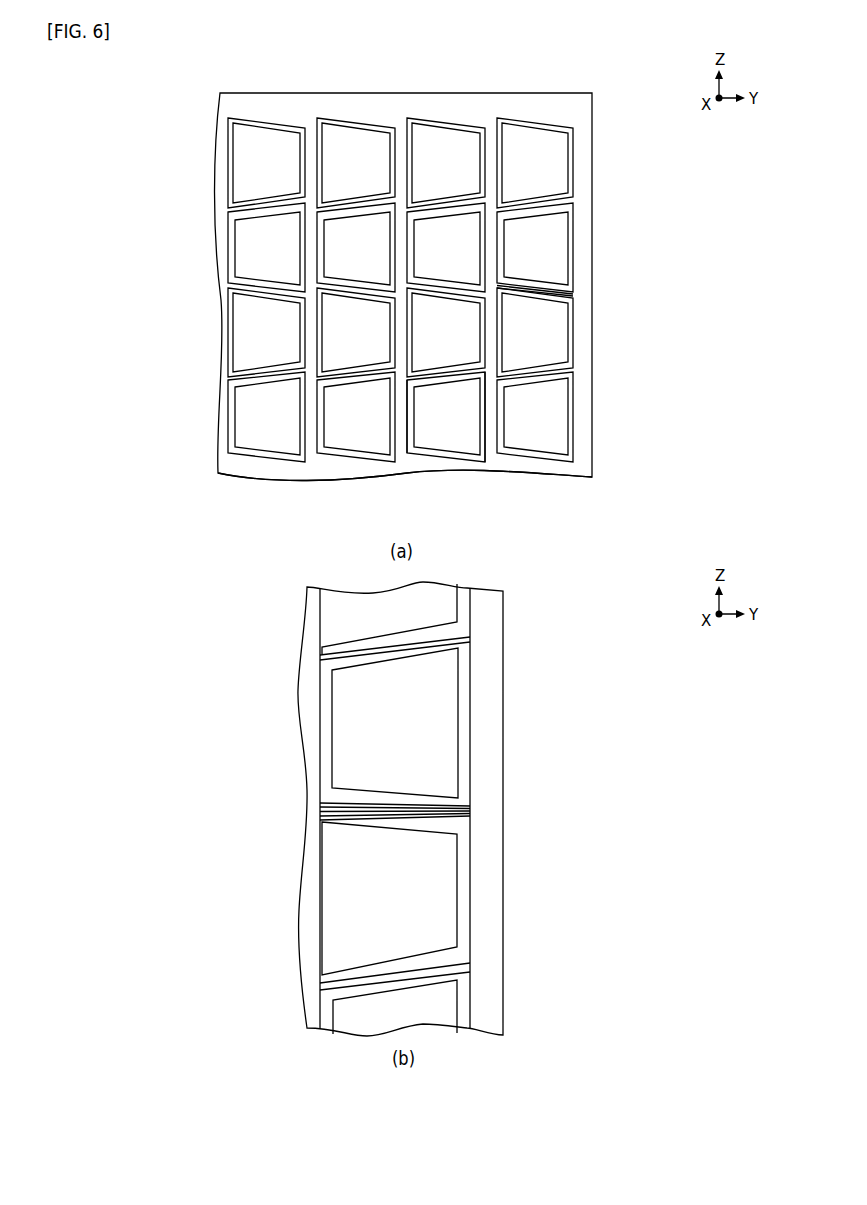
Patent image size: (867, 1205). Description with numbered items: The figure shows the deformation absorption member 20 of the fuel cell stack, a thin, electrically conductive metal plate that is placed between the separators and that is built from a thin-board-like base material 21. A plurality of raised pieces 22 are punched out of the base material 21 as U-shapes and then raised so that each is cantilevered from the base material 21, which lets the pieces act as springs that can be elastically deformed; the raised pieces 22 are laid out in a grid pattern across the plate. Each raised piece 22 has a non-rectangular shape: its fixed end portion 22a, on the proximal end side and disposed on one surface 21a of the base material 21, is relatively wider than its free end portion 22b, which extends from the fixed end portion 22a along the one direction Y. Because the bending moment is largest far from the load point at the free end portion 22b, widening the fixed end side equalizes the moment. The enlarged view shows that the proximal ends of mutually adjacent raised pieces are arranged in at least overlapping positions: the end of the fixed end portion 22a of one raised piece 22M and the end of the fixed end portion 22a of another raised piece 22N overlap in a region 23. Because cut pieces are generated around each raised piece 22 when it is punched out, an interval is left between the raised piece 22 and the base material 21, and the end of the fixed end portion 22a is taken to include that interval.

The deformation absorption member 20 is at (120, 66).
The base material 21 is at (220, 343).
The one surface of the base material 21a is at (230, 463).
The raised piece 22 is at (460, 442).
The fixed end portion 22a is at (485, 423).
The free end portion 22b is at (407, 432).
The another raised piece 22N is at (553, 232).
The one raised piece 22M is at (553, 322).
The region 23 is at (560, 305).